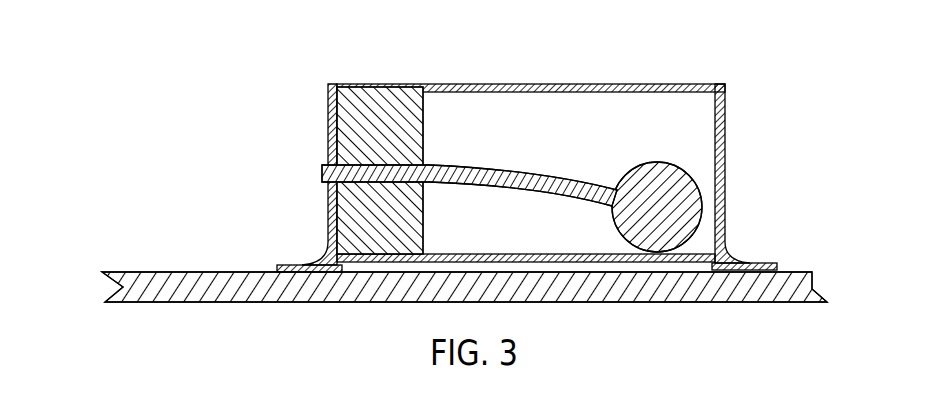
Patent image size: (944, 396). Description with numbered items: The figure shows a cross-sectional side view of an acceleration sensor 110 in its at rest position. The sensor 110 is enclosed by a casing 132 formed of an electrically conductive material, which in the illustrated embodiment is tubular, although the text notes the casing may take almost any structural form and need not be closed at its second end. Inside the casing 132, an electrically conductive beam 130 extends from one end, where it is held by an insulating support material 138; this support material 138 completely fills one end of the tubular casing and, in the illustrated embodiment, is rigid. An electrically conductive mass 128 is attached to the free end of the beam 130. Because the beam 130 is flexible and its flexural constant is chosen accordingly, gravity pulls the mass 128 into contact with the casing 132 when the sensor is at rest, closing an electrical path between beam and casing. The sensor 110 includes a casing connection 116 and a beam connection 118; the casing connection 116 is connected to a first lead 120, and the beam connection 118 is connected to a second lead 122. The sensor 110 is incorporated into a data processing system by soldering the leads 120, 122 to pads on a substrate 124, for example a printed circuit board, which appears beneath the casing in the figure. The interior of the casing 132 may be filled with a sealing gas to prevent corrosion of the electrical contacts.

The acceleration sensor 110 is at (740, 84).
The casing connection 116 is at (727, 170).
The beam connection 118 is at (328, 210).
The first lead 120 is at (297, 264).
The second lead 122 is at (760, 262).
The substrate 124 is at (157, 271).
The electrically conductive mass 128 is at (660, 163).
The electrically conductive beam 130 is at (522, 163).
The casing 132 is at (460, 84).
The insulating support material 138 is at (350, 84).